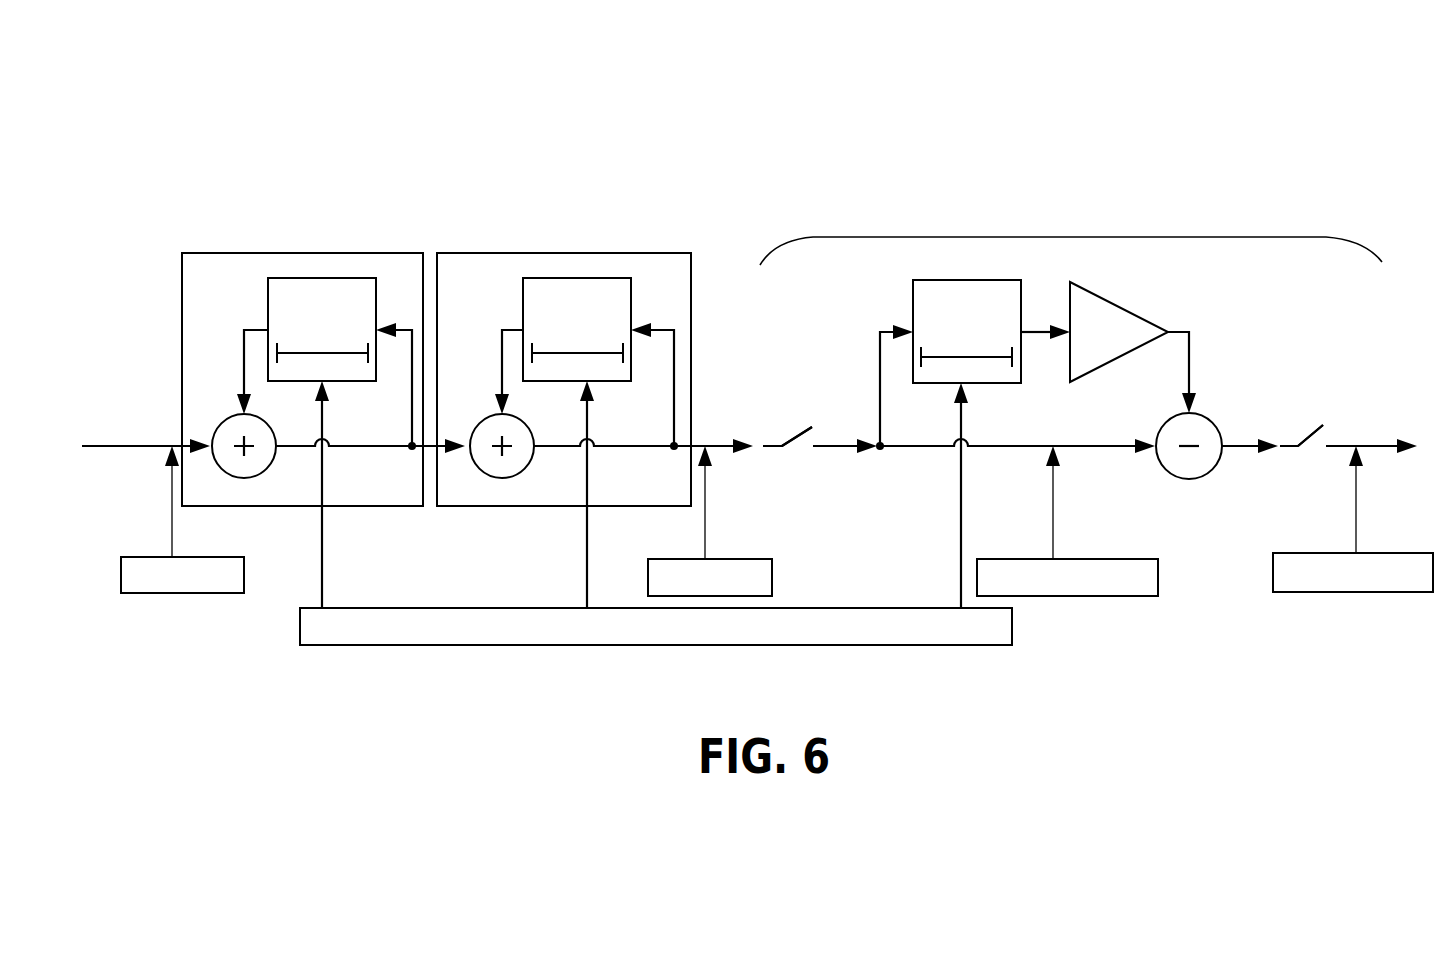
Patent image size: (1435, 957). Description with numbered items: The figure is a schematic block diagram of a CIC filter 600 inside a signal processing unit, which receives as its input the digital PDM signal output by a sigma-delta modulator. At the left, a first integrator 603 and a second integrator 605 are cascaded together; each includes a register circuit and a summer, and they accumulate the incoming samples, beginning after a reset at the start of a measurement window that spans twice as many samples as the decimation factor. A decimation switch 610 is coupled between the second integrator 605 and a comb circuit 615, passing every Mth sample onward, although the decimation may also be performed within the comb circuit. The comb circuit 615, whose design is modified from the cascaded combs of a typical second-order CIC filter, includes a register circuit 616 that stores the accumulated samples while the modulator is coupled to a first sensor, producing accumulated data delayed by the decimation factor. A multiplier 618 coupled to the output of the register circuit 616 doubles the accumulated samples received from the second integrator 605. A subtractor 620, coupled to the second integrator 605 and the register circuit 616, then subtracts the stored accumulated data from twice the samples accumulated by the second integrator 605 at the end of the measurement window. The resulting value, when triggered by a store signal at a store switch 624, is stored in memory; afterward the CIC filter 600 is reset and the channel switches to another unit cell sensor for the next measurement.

The CIC filter 600 is at (1363, 174).
The first integrator 603 is at (367, 253).
The second integrator 605 is at (622, 253).
The decimation switch 610 is at (791, 448).
The comb circuit 615 is at (1071, 237).
The register circuit 616 is at (913, 281).
The multiplier 618 is at (1108, 295).
The subtractor 620 is at (1187, 479).
The store switch 624 is at (1311, 433).